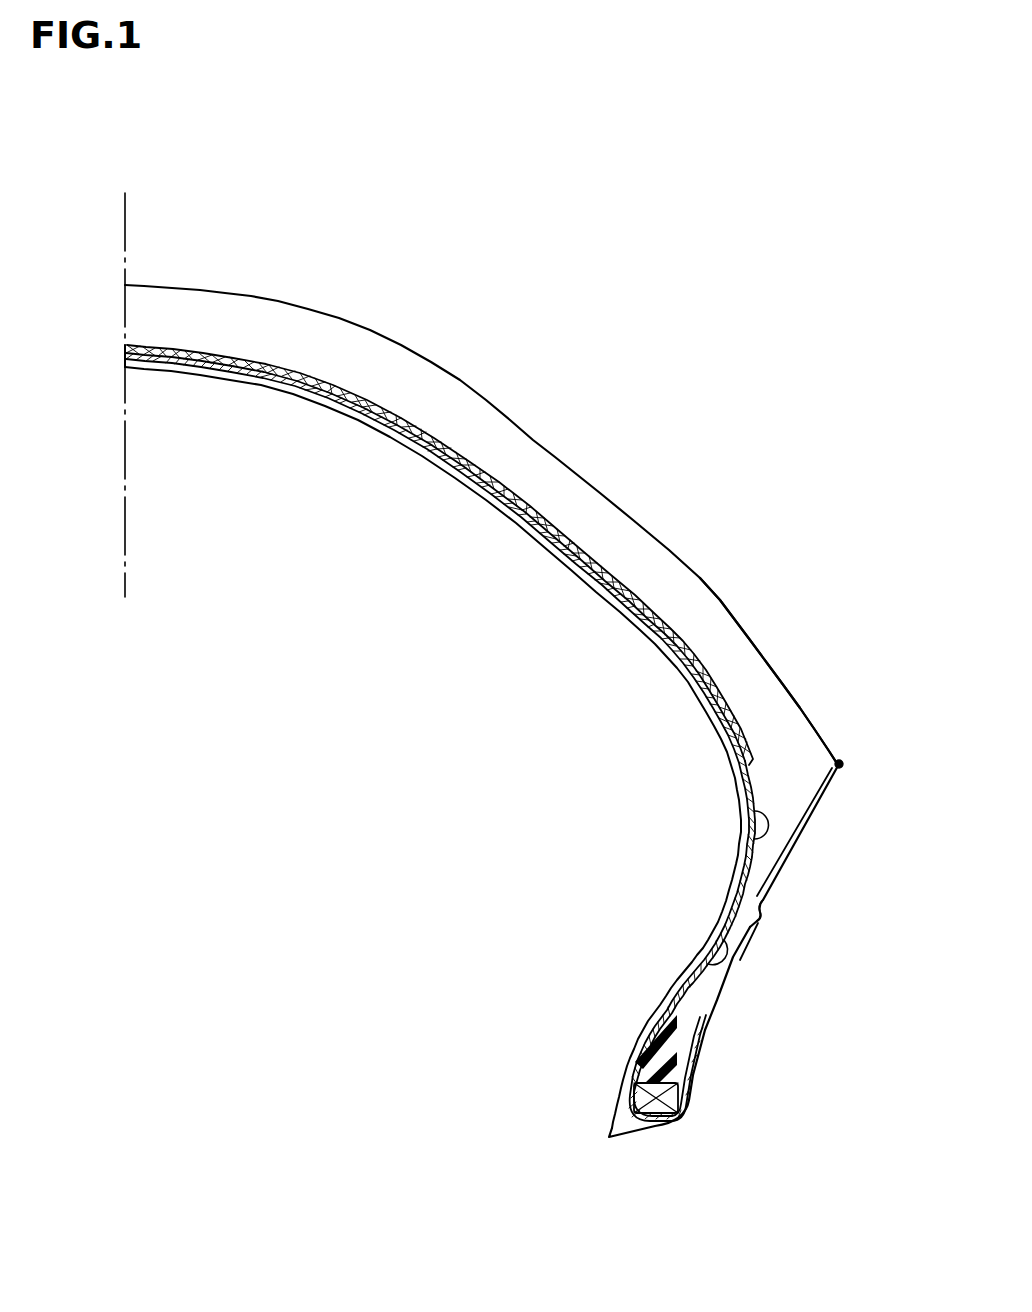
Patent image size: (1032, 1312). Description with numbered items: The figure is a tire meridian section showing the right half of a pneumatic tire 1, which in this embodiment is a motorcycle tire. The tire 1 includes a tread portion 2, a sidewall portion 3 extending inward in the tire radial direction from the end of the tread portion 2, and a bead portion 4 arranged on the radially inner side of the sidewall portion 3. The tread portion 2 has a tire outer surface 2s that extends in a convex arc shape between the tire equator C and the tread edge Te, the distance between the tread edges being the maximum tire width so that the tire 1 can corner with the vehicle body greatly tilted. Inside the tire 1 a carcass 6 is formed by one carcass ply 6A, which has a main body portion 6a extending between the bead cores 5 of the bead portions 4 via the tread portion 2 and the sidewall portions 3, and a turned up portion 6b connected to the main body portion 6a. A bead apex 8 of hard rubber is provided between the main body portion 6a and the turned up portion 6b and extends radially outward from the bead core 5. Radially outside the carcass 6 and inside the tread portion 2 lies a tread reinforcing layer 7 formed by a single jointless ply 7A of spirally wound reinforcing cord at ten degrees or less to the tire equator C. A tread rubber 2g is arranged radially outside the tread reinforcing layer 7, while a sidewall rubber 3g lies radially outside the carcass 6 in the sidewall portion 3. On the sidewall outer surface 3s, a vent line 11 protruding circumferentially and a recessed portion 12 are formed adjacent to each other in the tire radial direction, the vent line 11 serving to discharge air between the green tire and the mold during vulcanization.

The pneumatic tire 1 is at (610, 266).
The tread portion 2 is at (282, 285).
The tire outer surface 2s is at (464, 368).
The tread rubber 2g is at (740, 648).
The tread edge Te is at (840, 764).
The tread reinforcing layer 7 is at (590, 541).
The jointless ply 7A is at (502, 467).
The carcass 6 is at (725, 784).
The carcass ply 6A is at (597, 832).
The main body portion 6a is at (762, 830).
The turned up portion 6b is at (728, 956).
The sidewall portion 3 is at (827, 950).
The sidewall outer surface 3s is at (730, 997).
The sidewall rubber 3g is at (700, 988).
The recessed portion 12 is at (809, 820).
The vent line 11 is at (764, 915).
The bead portion 4 is at (587, 1093).
The bead core 5 is at (655, 1106).
The bead apex 8 is at (664, 1060).
The tire equator C is at (125, 380).